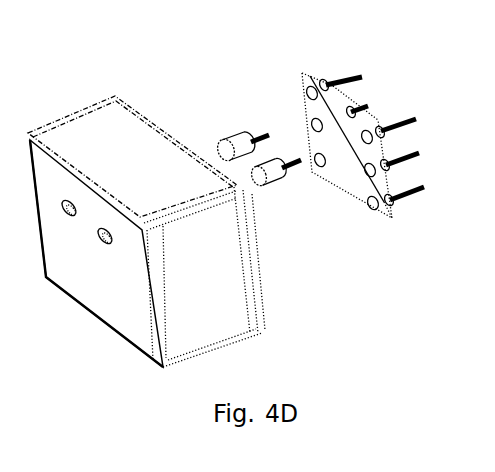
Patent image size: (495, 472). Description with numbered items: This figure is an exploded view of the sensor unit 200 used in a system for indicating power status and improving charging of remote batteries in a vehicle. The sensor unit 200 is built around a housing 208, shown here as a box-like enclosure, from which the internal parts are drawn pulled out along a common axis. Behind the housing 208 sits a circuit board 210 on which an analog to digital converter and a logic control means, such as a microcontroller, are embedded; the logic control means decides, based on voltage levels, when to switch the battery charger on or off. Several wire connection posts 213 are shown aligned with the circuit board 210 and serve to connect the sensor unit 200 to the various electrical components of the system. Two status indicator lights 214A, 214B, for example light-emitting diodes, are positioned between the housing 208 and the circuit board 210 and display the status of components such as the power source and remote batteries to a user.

The sensor unit 200 is at (182, 90).
The housing 208 is at (92, 108).
The circuit board 210 is at (348, 152).
The wire connection posts 213 is at (424, 187).
The light 214A is at (227, 142).
The light 214B is at (275, 173).